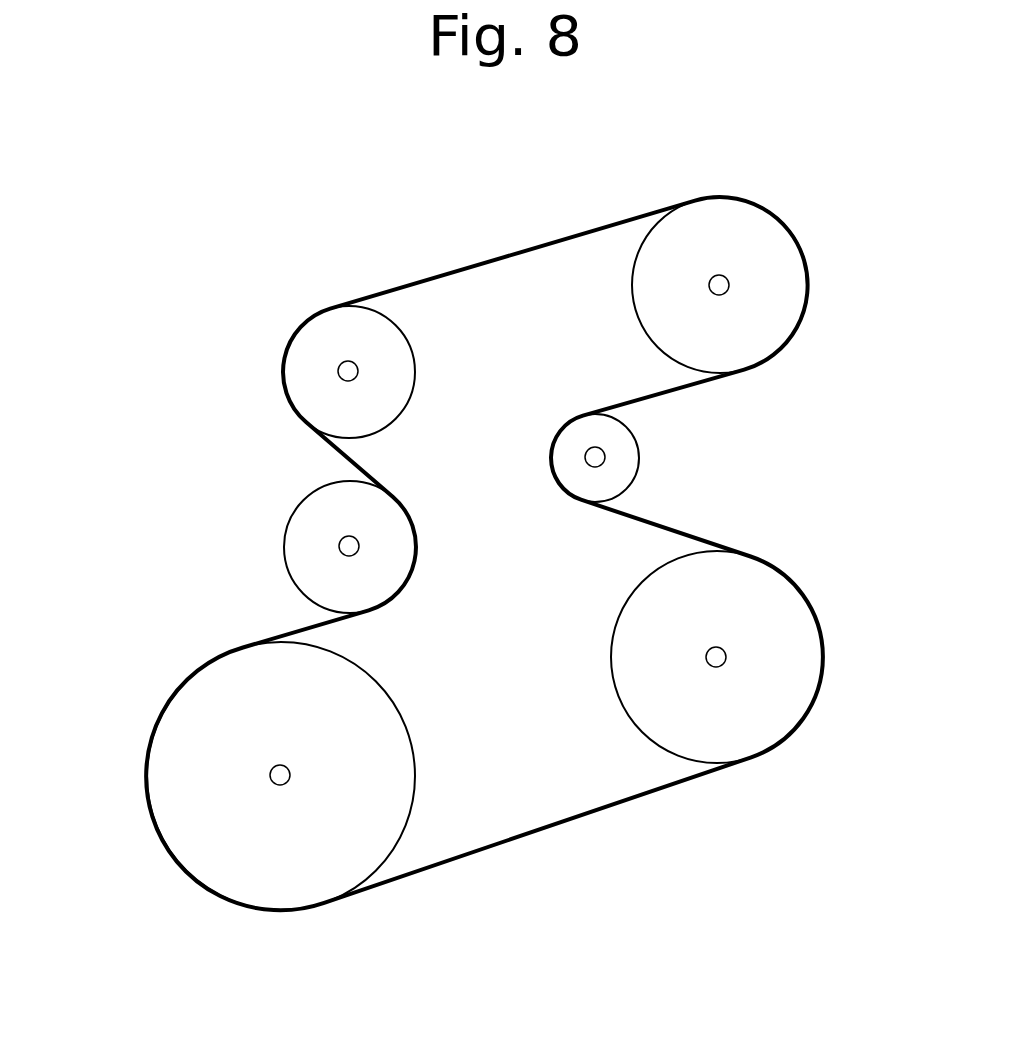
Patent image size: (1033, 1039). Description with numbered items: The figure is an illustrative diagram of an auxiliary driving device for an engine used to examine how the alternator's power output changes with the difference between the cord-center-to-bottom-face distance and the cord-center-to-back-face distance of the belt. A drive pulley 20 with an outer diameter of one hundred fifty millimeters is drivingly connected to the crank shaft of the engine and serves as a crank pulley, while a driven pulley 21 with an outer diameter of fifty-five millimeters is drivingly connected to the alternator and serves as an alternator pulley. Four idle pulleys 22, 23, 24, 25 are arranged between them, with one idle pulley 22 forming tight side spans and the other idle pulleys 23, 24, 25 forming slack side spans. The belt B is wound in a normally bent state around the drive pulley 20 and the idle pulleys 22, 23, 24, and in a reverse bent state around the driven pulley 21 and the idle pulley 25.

The drive pulley 20 is at (147, 808).
The driven pulley 21 is at (640, 457).
The idle pulley 22 is at (822, 645).
The idle pulley 23 is at (808, 283).
The idle pulley 24 is at (283, 372).
The idle pulley 25 is at (284, 547).
The belt B is at (503, 843).